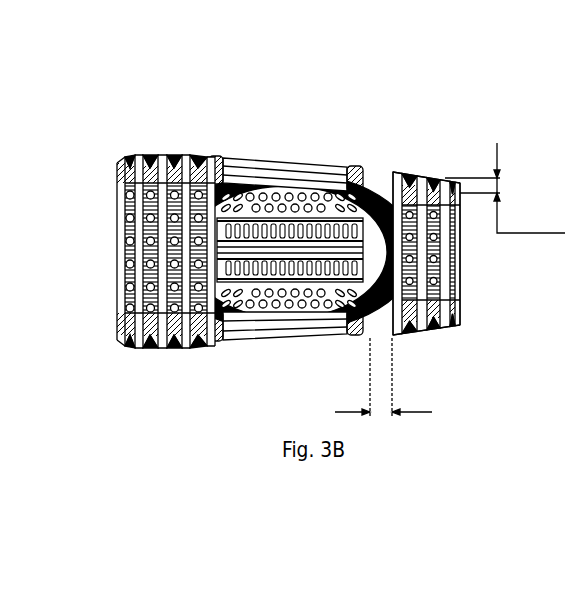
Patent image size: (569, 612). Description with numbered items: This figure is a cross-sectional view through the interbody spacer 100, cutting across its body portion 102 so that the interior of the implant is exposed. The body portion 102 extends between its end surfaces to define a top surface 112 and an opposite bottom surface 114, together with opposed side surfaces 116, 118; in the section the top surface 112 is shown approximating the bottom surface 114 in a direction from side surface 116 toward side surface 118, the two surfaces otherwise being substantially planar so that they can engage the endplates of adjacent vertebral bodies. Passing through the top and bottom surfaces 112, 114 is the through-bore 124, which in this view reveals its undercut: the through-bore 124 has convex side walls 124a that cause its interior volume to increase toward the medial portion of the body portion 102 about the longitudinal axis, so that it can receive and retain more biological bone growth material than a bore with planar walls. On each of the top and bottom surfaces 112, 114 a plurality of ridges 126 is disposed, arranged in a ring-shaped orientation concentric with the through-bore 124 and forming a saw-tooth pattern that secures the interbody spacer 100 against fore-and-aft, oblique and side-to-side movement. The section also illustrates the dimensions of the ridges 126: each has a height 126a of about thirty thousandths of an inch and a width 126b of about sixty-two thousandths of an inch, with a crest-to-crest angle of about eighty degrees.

The interbody spacer 100 is at (298, 231).
The body portion 102 is at (123, 240).
The top surface 112 is at (159, 134).
The bottom surface 114 is at (149, 354).
The side surface 116 is at (471, 252).
The side surface 118 is at (123, 248).
The through-bore 124 is at (281, 208).
The convex side walls 124a is at (230, 130).
The ridges 126 is at (467, 237).
The height 126a is at (505, 190).
The width 126b is at (412, 382).